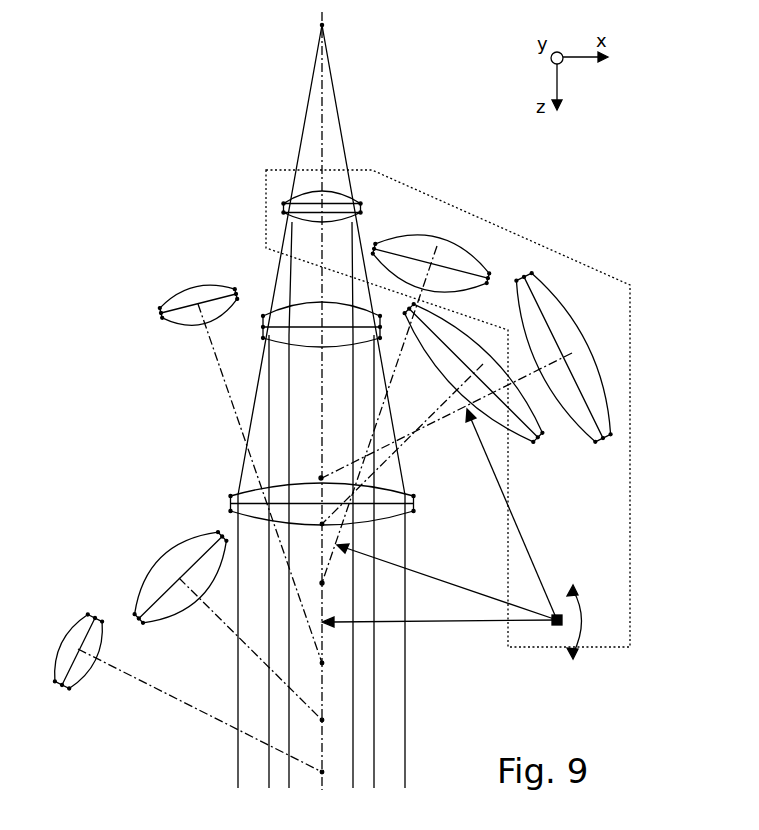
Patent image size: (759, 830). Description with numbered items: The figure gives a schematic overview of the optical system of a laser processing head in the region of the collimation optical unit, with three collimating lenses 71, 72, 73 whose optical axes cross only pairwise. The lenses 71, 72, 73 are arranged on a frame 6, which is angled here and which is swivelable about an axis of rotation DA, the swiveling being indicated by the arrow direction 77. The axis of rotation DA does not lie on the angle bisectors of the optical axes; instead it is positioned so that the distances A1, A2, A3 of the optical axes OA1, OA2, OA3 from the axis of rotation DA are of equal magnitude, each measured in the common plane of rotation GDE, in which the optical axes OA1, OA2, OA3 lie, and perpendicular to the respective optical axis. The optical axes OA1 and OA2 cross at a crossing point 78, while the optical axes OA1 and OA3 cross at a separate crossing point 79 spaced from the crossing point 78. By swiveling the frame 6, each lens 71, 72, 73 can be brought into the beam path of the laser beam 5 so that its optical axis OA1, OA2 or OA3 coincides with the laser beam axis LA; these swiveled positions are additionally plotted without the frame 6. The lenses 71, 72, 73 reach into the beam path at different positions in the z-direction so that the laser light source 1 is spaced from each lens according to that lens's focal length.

The laser light source 1 is at (316, 24).
The laser beam 5 is at (305, 118).
The frame 6 is at (615, 512).
The collimating lens 71 is at (340, 197).
The collimating lens 72 is at (465, 265).
The collimating lens 73 is at (598, 403).
The arrow direction 77 is at (589, 616).
The crossing point 78 is at (322, 583).
The crossing point 79 is at (320, 478).
The laser beam axis LA is at (342, 115).
The optical axis OA1 is at (320, 248).
The optical axis OA2 is at (405, 352).
The optical axis OA3 is at (448, 412).
The axis of rotation DA is at (557, 630).
The distance A1 is at (439, 636).
The distance A2 is at (447, 582).
The distance A3 is at (511, 514).
The common plane of rotation GDE is at (157, 473).